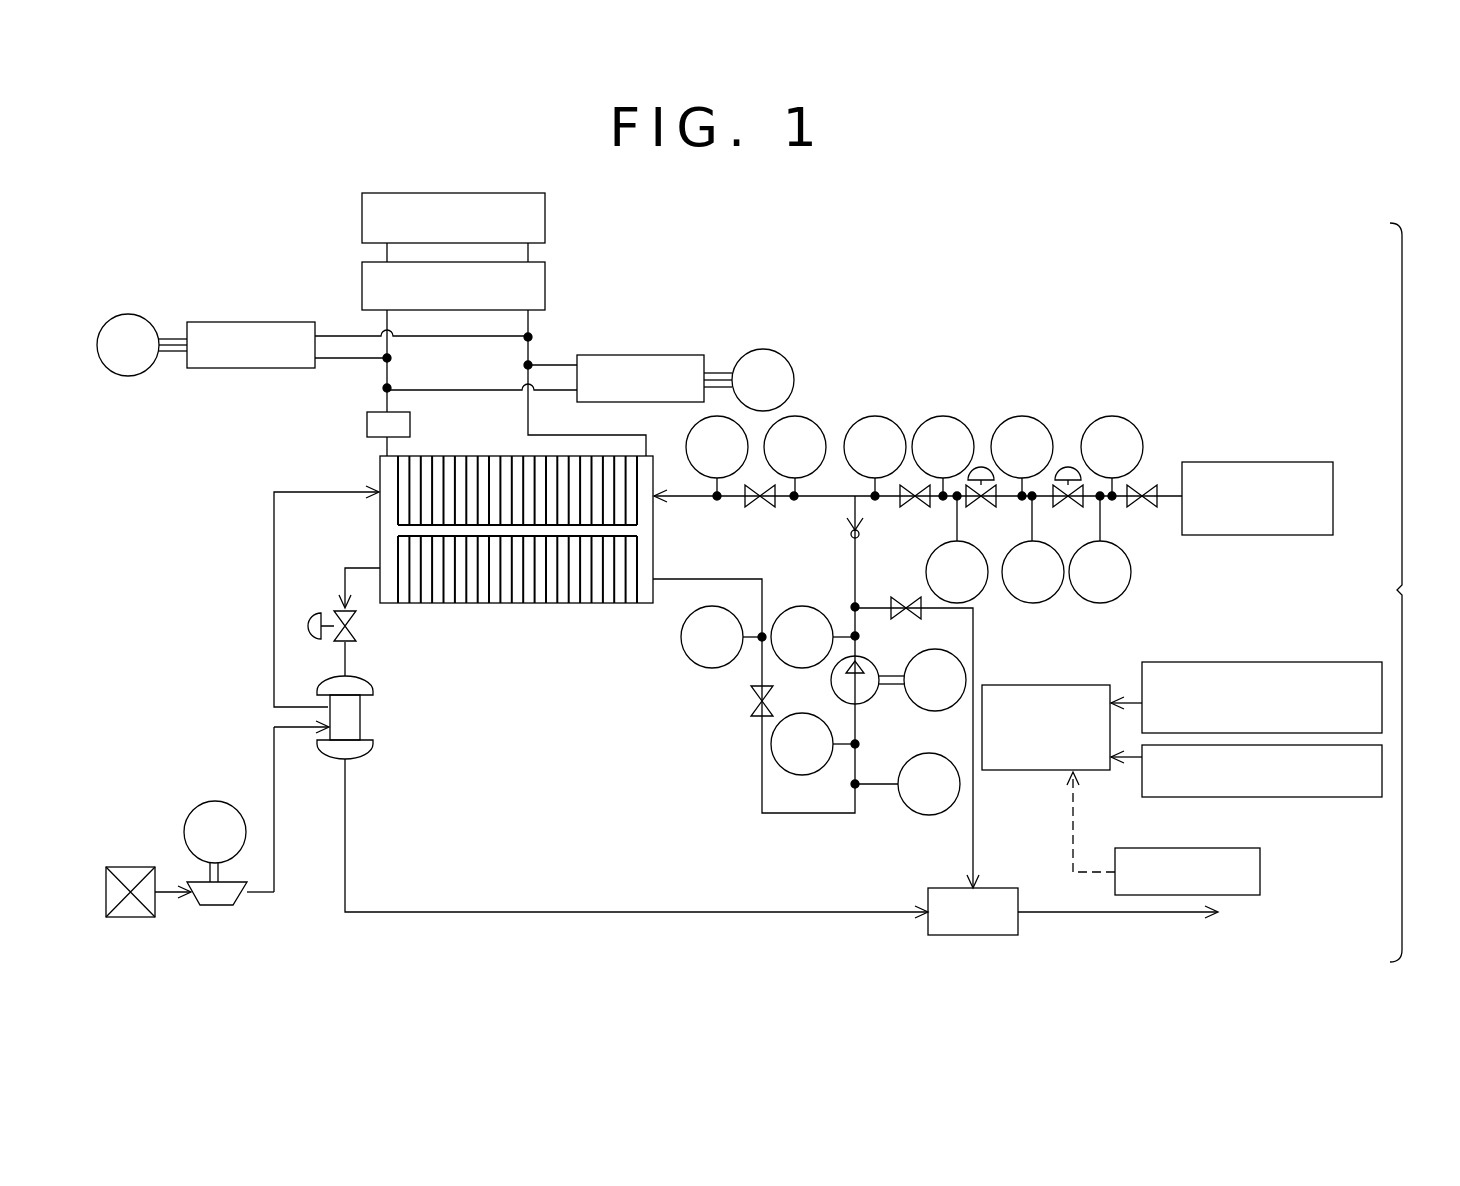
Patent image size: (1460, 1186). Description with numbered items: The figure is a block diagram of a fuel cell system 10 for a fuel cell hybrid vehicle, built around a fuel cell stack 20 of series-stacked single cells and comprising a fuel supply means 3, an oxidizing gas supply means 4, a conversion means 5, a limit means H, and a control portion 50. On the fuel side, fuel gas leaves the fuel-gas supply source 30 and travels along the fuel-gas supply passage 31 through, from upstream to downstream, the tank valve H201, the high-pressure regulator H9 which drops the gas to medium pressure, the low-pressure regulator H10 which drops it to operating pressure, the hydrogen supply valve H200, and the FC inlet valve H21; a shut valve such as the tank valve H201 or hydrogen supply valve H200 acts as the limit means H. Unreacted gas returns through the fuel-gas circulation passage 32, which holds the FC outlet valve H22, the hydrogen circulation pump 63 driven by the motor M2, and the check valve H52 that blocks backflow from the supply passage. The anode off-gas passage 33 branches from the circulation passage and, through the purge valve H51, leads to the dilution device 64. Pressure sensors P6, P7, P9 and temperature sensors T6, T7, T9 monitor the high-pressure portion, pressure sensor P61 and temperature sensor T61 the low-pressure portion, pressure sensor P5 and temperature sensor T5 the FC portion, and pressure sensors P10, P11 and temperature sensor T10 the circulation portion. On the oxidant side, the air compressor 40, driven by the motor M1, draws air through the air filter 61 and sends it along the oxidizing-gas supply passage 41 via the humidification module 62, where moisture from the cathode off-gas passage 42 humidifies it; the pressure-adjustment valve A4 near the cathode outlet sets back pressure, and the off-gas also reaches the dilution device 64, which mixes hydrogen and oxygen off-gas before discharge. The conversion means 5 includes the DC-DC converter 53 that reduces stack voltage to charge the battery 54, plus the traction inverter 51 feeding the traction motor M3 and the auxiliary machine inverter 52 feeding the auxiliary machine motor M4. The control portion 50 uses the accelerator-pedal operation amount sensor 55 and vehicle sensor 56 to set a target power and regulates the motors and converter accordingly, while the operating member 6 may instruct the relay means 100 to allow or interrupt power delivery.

The fuel cell system 10 is at (1443, 606).
The fuel cell stack 20 is at (540, 603).
The fuel supply means 3 is at (878, 355).
The fuel-gas supply source 30 is at (1258, 462).
The fuel-gas supply passage 31 is at (815, 497).
The fuel-gas circulation passage 32 is at (762, 800).
The anode off-gas passage 33 is at (975, 672).
The oxidizing gas supply means 4 is at (190, 578).
The air compressor 40 is at (222, 905).
The oxidizing-gas supply passage 41 is at (325, 492).
The cathode off-gas passage 42 is at (362, 568).
The conversion means 5 is at (690, 270).
The control portion 50 is at (1075, 685).
The traction inverter 51 is at (640, 355).
The auxiliary machine inverter 52 is at (255, 322).
The DC-DC converter 53 is at (545, 298).
The battery 54 is at (545, 230).
The accelerator-pedal operation amount sensor 55 is at (1262, 662).
The vehicle sensor 56 is at (1263, 797).
The operating member 6 is at (1260, 870).
The air filter 61 is at (130, 867).
The humidification module 62 is at (354, 720).
The hydrogen circulation pump 63 is at (875, 698).
The dilution device 64 is at (1018, 898).
The relay means 100 is at (410, 424).
The limit means H is at (1155, 408).
The FC inlet valve H21 is at (757, 515).
The check valve H52 is at (830, 551).
The hydrogen supply valve H200 is at (917, 515).
The low-pressure regulator H10 is at (983, 506).
The high-pressure regulator H9 is at (1067, 506).
The tank valve H201 is at (1142, 515).
The purge valve H51 is at (902, 627).
The FC outlet valve H22 is at (738, 701).
The pressure-adjustment valve A4 is at (351, 626).
The motor M1 is at (215, 832).
The motor M2 is at (935, 680).
The traction motor M3 is at (749, 380).
The auxiliary machine motor M4 is at (142, 345).
The pressure sensor P5 is at (717, 456).
The pressure sensor P6 is at (1112, 456).
The pressure sensor P7 is at (1022, 456).
The pressure sensor P9 is at (943, 456).
The pressure sensor P10 is at (813, 744).
The pressure sensor P11 is at (813, 637).
The pressure sensor P61 is at (875, 456).
The temperature sensor T5 is at (721, 637).
The temperature sensor T6 is at (1100, 549).
The temperature sensor T7 is at (1033, 549).
The temperature sensor T9 is at (957, 549).
The temperature sensor T10 is at (907, 784).
The temperature sensor T61 is at (795, 456).